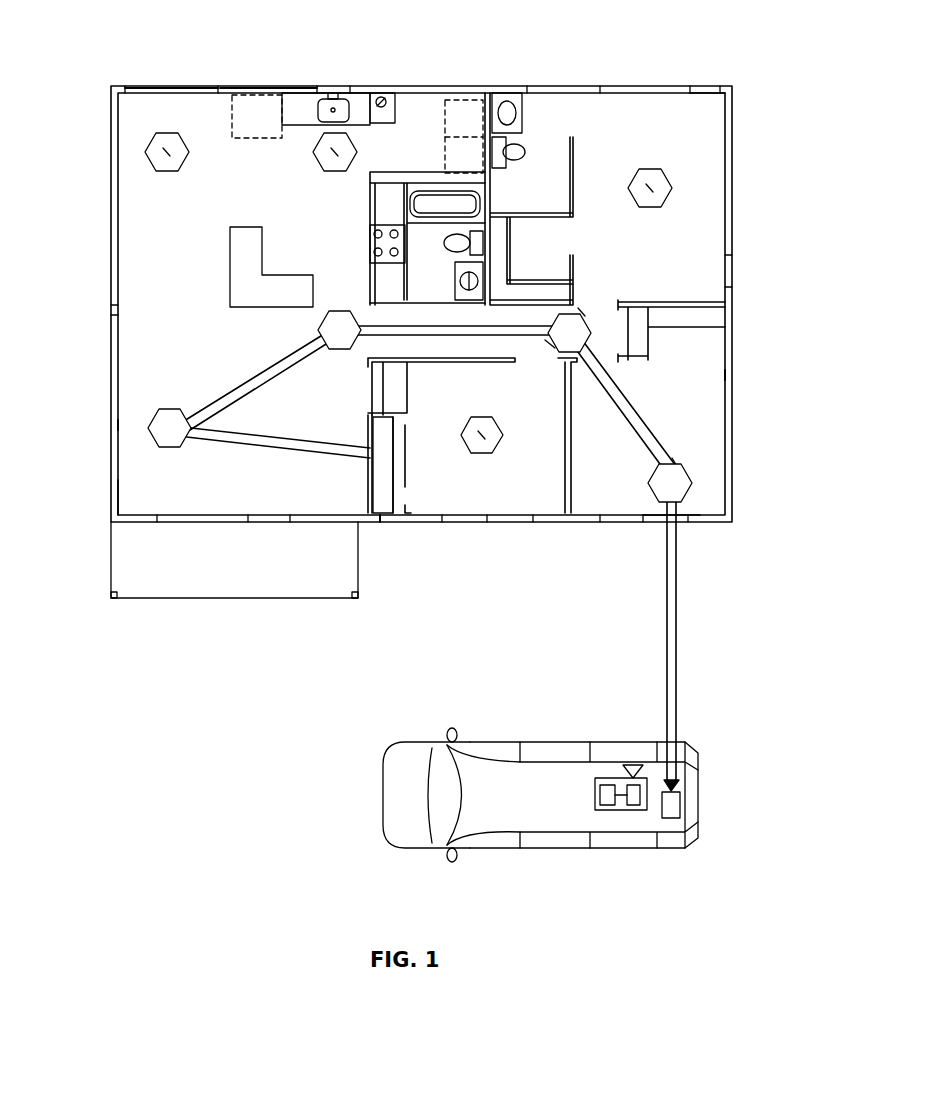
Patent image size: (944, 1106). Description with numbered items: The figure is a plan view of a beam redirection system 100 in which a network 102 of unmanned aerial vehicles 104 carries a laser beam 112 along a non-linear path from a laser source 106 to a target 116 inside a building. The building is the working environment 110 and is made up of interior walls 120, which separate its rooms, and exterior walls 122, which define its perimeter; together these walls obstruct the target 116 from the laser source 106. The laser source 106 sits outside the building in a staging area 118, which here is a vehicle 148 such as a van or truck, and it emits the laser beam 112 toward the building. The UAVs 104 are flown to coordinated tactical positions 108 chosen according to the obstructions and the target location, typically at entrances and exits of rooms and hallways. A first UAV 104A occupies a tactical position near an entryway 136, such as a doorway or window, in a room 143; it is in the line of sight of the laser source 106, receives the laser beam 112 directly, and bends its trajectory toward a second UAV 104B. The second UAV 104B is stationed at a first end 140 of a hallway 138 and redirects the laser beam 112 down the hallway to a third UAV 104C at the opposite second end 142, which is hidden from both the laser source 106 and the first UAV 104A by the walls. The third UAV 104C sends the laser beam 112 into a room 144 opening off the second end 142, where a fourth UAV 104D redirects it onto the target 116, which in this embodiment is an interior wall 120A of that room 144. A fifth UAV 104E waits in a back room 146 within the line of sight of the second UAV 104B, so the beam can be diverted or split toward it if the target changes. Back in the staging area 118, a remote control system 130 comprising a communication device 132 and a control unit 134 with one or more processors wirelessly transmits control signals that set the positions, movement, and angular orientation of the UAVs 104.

The beam redirection system 100 is at (792, 84).
The network 102 is at (677, 126).
The unmanned aerial vehicle 104 is at (165, 130).
The first UAV 104A is at (686, 472).
The second UAV 104B is at (582, 318).
The third UAV 104C is at (346, 312).
The fourth UAV 104D is at (176, 410).
The fifth UAV 104E is at (647, 168).
The laser source 106 is at (675, 804).
The tactical position 108 is at (581, 302).
The working environment 110 is at (255, 82).
The laser beam 112 is at (245, 440).
The target 116 is at (368, 495).
The staging area 118 is at (586, 816).
The interior wall 120 is at (517, 300).
The interior wall 120A is at (369, 468).
The exterior wall 122 is at (118, 422).
The remote control system 130 is at (599, 811).
The communication device 132 is at (634, 806).
The control unit 134 is at (606, 806).
The entryway 136 is at (686, 528).
The hallway 138 is at (447, 300).
The first end 140 is at (547, 352).
The second end 142 is at (373, 300).
The room 143 is at (697, 357).
The room 144 is at (136, 469).
The back room 146 is at (710, 182).
The vehicle 148 is at (481, 850).